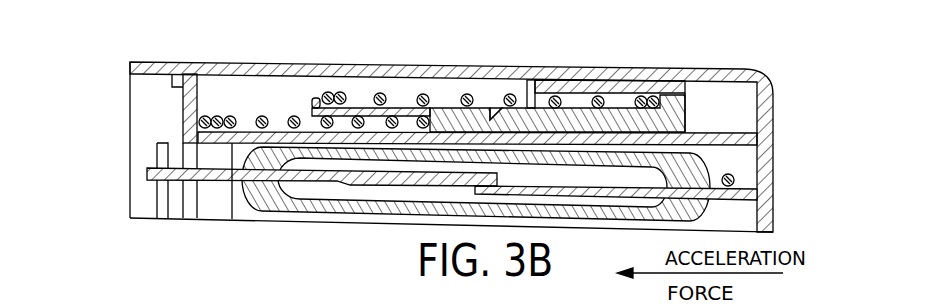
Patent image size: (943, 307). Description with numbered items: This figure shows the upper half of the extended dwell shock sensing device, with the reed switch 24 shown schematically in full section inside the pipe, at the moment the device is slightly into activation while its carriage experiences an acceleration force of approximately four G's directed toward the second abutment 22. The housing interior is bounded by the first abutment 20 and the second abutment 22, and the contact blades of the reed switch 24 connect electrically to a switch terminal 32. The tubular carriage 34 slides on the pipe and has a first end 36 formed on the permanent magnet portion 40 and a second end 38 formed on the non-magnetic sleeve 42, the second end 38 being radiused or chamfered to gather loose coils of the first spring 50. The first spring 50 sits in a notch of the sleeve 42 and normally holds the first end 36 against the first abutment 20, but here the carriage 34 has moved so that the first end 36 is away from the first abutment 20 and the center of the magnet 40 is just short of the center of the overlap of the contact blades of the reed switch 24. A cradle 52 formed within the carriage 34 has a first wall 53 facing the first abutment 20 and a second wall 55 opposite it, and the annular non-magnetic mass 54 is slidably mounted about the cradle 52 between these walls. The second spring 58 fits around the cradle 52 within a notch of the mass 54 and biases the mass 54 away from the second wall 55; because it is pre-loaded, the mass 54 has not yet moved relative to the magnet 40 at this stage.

The first abutment 20 is at (772, 103).
The second abutment 22 is at (197, 133).
The reed switch 24 is at (462, 125).
The switch terminal 32 is at (734, 174).
The tubular carriage 34 is at (380, 216).
The first end 36 is at (685, 118).
The second end 38 is at (310, 106).
The permanent magnet portion 40 is at (528, 100).
The non-magnetic sleeve 42 is at (360, 108).
The first spring 50 is at (233, 220).
The cradle 52 is at (519, 107).
The first wall 53 is at (652, 96).
The non-magnetic mass 54 is at (565, 81).
The second wall 55 is at (328, 92).
The second spring 58 is at (423, 94).